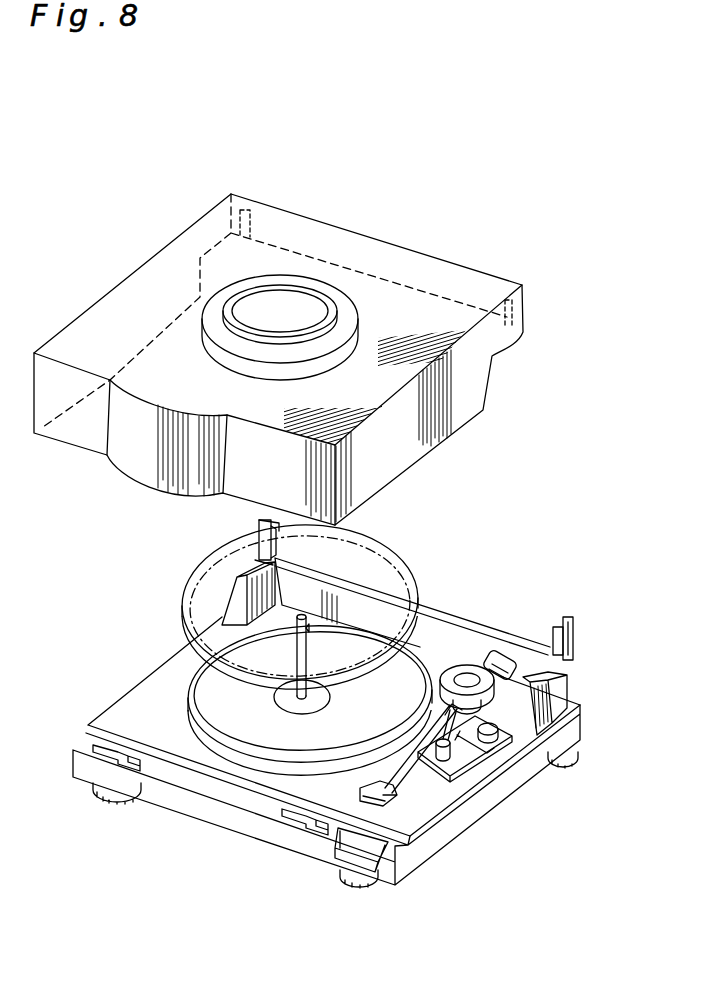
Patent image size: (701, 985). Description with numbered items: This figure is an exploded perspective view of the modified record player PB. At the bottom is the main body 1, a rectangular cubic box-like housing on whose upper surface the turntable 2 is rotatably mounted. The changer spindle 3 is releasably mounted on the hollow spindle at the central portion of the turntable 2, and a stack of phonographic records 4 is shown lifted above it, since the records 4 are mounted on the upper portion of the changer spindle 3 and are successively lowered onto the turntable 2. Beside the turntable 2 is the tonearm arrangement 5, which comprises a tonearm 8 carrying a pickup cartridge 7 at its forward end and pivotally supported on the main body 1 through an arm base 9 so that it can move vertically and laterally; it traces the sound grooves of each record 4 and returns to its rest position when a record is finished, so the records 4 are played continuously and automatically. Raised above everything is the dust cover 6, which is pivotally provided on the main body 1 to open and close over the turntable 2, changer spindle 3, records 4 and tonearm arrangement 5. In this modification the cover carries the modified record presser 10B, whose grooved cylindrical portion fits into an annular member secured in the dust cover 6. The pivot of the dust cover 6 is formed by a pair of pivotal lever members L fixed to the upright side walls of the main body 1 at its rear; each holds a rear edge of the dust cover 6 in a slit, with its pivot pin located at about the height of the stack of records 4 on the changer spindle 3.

The modified record player PB is at (406, 160).
The dust cover 6 is at (405, 258).
The modified record presser 10B is at (288, 297).
The phonographic discs or records 4 is at (430, 560).
The pivotal lever members L is at (260, 524).
The main body 1 is at (503, 790).
The turntable 2 is at (237, 758).
The changer spindle 3 is at (306, 672).
The arm base 9 is at (485, 700).
The tonearm arrangement 5 is at (400, 768).
The pickup cartridge 7 is at (387, 803).
The tonearm 8 is at (432, 748).